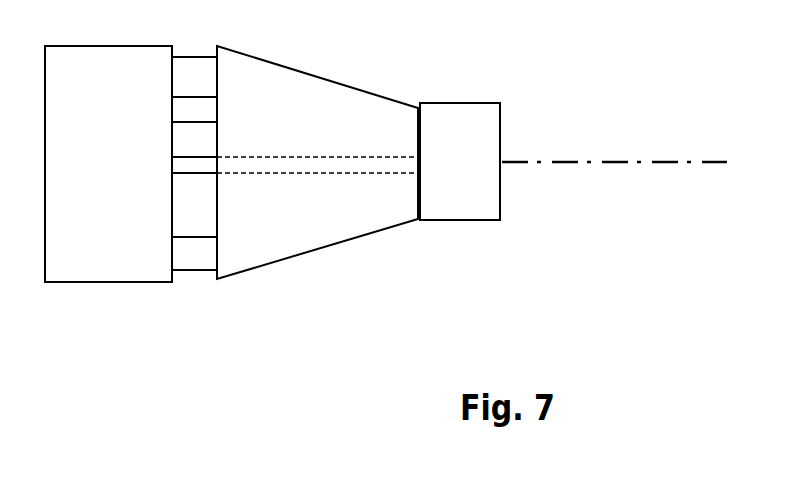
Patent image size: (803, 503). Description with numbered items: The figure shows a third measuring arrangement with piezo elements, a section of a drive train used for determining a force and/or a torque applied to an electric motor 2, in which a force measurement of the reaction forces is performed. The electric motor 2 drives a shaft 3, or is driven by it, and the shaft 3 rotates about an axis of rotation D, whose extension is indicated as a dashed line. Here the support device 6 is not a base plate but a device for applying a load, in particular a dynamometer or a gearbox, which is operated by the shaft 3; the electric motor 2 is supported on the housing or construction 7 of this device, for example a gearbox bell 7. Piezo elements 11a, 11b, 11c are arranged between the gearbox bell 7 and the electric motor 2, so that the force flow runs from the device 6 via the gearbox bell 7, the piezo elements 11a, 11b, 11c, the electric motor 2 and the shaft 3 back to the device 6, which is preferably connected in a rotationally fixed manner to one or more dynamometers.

The electric motor 2 is at (101, 175).
The piezo element 11a is at (177, 88).
The piezo element 11b is at (177, 151).
The piezo element 11c is at (177, 265).
The shaft 3 is at (210, 173).
The gearbox bell 7 is at (293, 203).
The support device 6 is at (487, 117).
The axis of rotation D is at (567, 163).